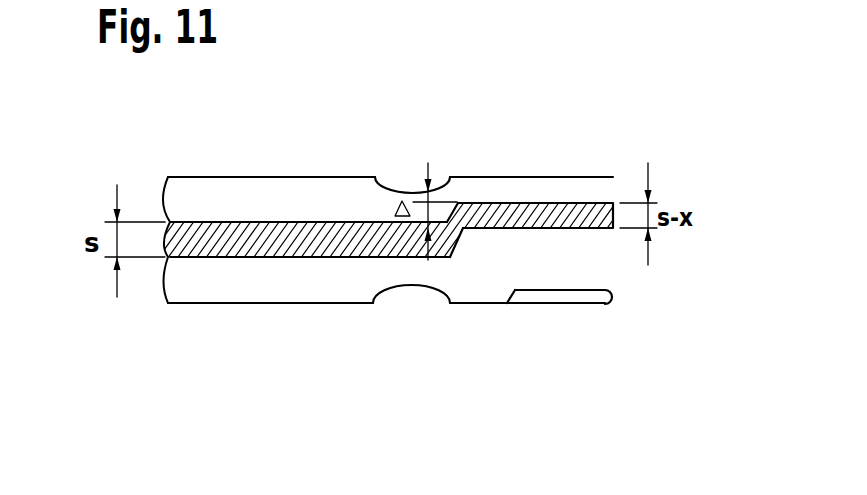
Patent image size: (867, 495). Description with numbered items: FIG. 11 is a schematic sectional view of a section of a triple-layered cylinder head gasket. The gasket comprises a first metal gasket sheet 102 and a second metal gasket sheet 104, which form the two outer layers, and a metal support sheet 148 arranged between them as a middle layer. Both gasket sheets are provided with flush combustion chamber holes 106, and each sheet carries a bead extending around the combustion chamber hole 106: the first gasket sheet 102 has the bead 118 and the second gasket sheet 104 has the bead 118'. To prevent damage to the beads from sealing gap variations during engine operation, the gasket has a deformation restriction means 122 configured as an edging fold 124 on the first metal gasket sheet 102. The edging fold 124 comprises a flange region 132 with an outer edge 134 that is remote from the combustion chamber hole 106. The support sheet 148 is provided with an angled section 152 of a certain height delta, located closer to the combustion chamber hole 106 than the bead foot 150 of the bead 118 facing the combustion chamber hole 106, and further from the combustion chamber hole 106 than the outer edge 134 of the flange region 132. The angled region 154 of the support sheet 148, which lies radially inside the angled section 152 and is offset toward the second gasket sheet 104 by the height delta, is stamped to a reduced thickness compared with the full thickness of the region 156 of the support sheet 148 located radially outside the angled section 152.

The first metal gasket sheet 102 is at (255, 304).
The second metal gasket sheet 104 is at (254, 177).
The combustion chamber hole 106 is at (722, 278).
The bead 118 is at (400, 340).
The bead 118' is at (412, 140).
The deformation restriction means 122 is at (596, 270).
The edging fold 124 is at (603, 289).
The flange region 132 is at (571, 291).
The outer edge 134 is at (517, 291).
The metal support sheet 148 is at (190, 247).
The bead foot 150 is at (449, 304).
The angled section 152 is at (465, 265).
The angled region 154 is at (527, 208).
The region of the support sheet 156 is at (322, 232).